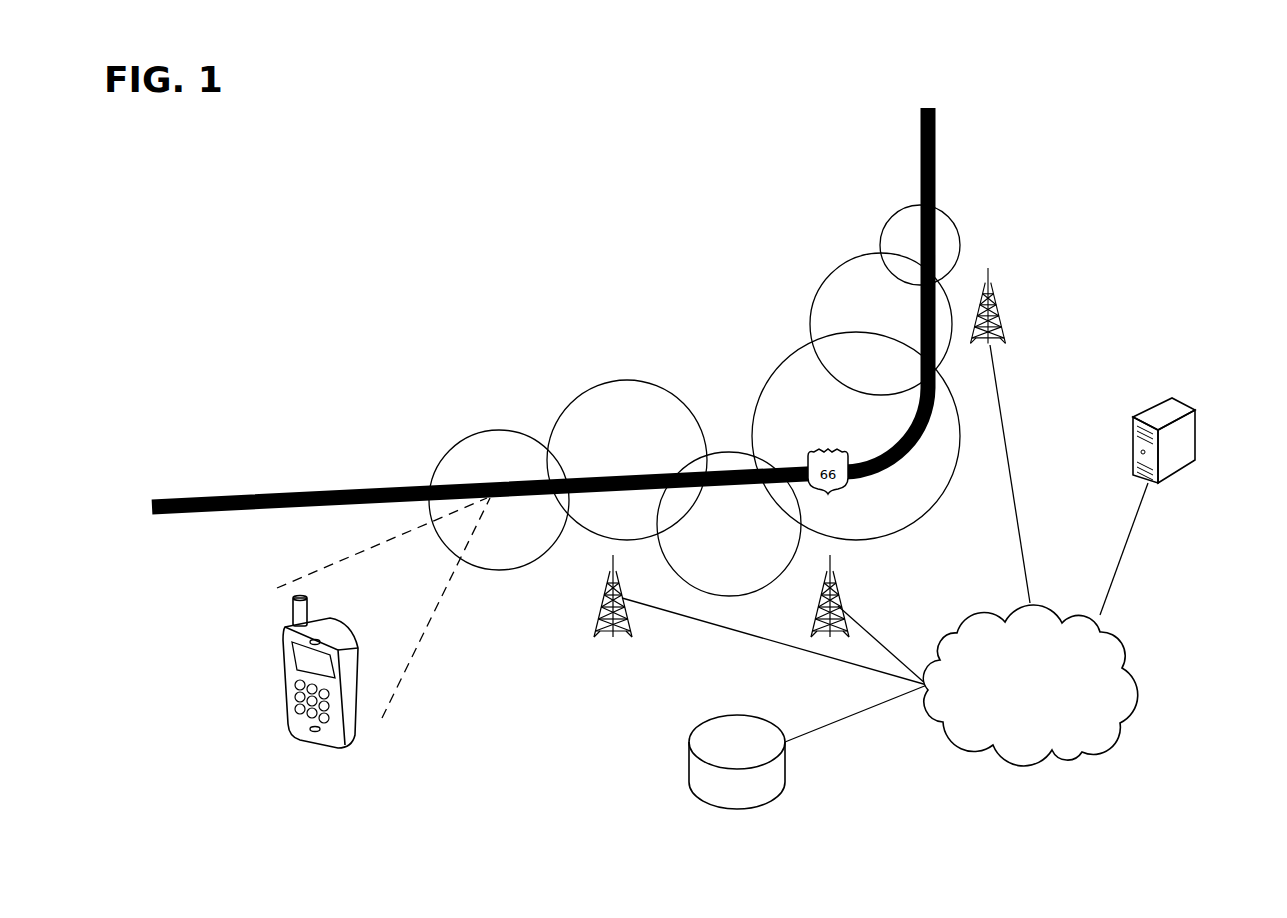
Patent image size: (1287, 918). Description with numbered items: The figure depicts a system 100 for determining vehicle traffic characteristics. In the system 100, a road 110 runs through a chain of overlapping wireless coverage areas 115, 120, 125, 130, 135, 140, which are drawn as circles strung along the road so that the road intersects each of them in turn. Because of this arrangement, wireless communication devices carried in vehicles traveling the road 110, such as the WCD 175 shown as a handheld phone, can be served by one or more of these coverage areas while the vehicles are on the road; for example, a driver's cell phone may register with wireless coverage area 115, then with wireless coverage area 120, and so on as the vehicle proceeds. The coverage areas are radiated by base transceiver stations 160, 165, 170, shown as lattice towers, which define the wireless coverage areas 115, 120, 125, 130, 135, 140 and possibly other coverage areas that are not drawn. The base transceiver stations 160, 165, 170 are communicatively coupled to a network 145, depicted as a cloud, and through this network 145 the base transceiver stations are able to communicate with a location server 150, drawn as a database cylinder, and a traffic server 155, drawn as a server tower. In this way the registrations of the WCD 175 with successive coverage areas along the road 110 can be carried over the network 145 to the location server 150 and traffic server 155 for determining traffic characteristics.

The system 100 is at (458, 163).
The road 110 is at (215, 497).
The wireless coverage area 115 is at (497, 428).
The wireless coverage area 120 is at (626, 380).
The wireless coverage area 125 is at (720, 428).
The wireless coverage area 130 is at (777, 339).
The wireless coverage area 135 is at (866, 253).
The wireless coverage area 140 is at (908, 206).
The network 145 is at (968, 613).
The location server 150 is at (690, 737).
The traffic server 155 is at (1170, 395).
The base transceiver station 160 is at (578, 604).
The base transceiver station 165 is at (815, 588).
The base transceiver station 170 is at (1016, 308).
The WCD 175 is at (288, 622).